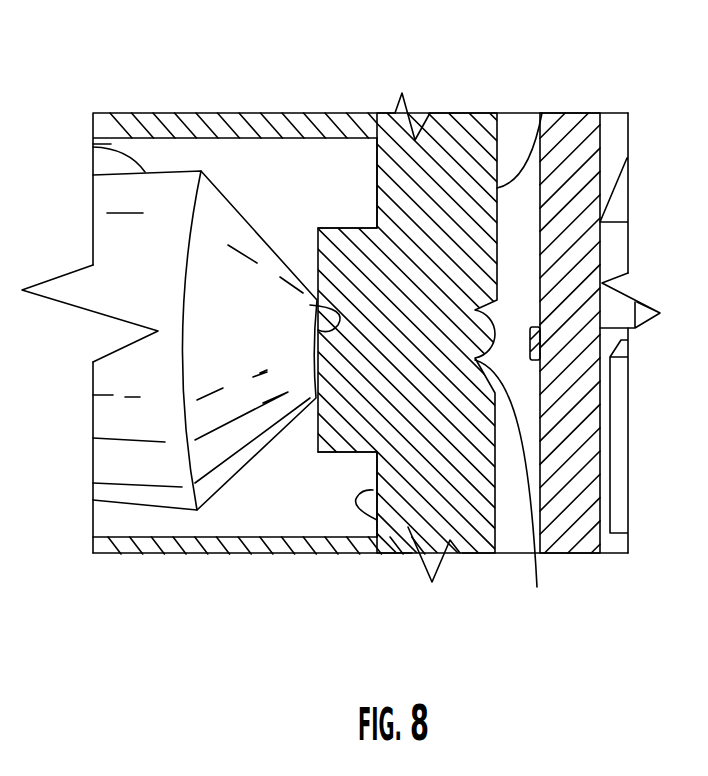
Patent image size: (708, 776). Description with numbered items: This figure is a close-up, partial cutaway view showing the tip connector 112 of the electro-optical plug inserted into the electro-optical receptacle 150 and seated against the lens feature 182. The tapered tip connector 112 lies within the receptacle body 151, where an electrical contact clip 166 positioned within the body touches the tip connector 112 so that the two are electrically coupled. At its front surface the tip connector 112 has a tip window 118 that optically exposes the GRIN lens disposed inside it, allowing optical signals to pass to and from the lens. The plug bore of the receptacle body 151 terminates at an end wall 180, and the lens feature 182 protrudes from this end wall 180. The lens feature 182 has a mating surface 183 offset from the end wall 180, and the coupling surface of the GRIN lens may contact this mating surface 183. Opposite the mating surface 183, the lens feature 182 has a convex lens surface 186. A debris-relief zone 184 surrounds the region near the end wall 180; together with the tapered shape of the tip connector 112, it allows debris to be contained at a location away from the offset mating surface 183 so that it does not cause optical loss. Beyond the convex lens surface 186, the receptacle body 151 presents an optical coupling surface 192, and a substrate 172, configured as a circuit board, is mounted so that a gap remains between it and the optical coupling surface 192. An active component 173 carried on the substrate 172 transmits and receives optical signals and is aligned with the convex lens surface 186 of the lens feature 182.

The tip connector 112 is at (153, 217).
The tip window 118 is at (310, 305).
The electro-optical receptacle 150 is at (135, 517).
The receptacle body 151 is at (427, 143).
The electrical contact clip 166 is at (107, 160).
The substrate 172 is at (580, 547).
The active component 173 is at (531, 336).
The end wall 180 is at (377, 520).
The lens feature 182 is at (310, 452).
The mating surface 183 is at (316, 253).
The debris-relief zone 184 is at (343, 177).
The convex lens surface 186 is at (515, 369).
The optical coupling surface 192 is at (542, 113).